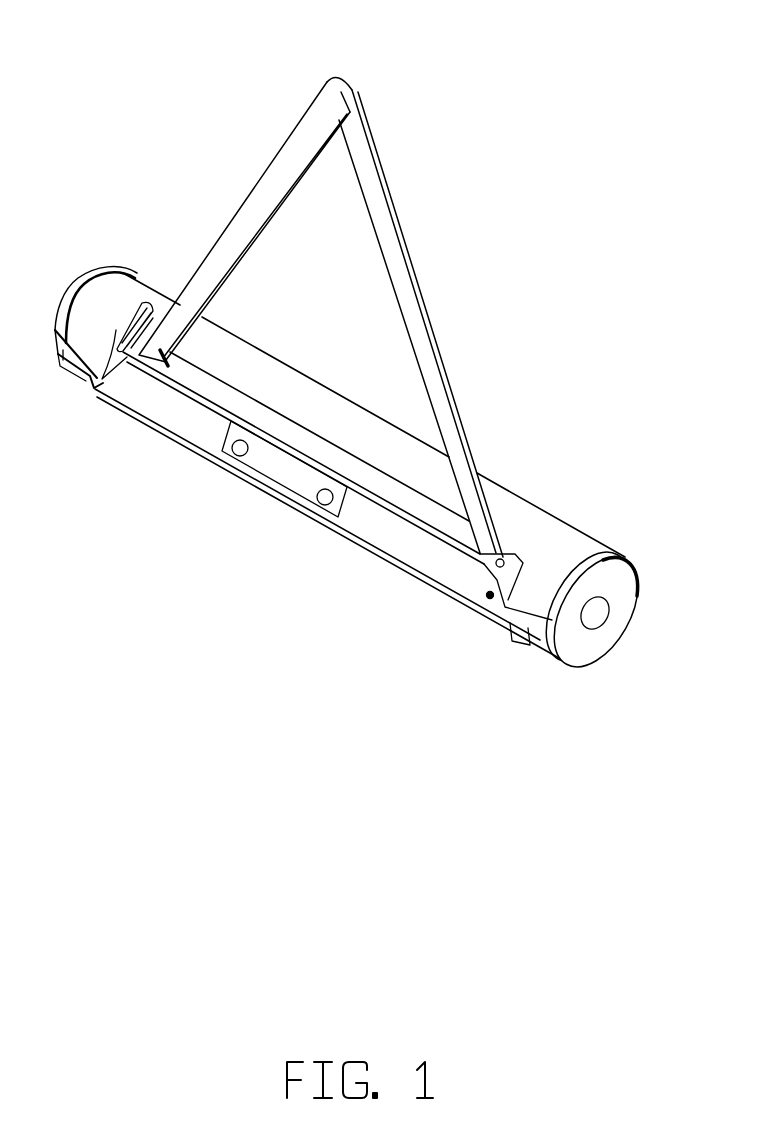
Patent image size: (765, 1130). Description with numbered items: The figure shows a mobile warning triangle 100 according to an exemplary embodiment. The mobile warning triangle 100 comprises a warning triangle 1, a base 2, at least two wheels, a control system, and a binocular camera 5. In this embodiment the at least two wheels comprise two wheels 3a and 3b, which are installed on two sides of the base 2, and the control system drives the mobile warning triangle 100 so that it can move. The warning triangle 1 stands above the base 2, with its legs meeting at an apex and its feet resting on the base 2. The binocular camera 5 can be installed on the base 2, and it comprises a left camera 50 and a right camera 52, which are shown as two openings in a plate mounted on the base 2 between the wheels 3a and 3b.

The mobile warning triangle 100 is at (489, 42).
The warning triangle 1 is at (389, 230).
The base 2 is at (545, 534).
The wheel 3a is at (612, 633).
The wheel 3b is at (121, 273).
The binocular camera 5 is at (178, 560).
The left camera 50 is at (317, 497).
The right camera 52 is at (232, 449).